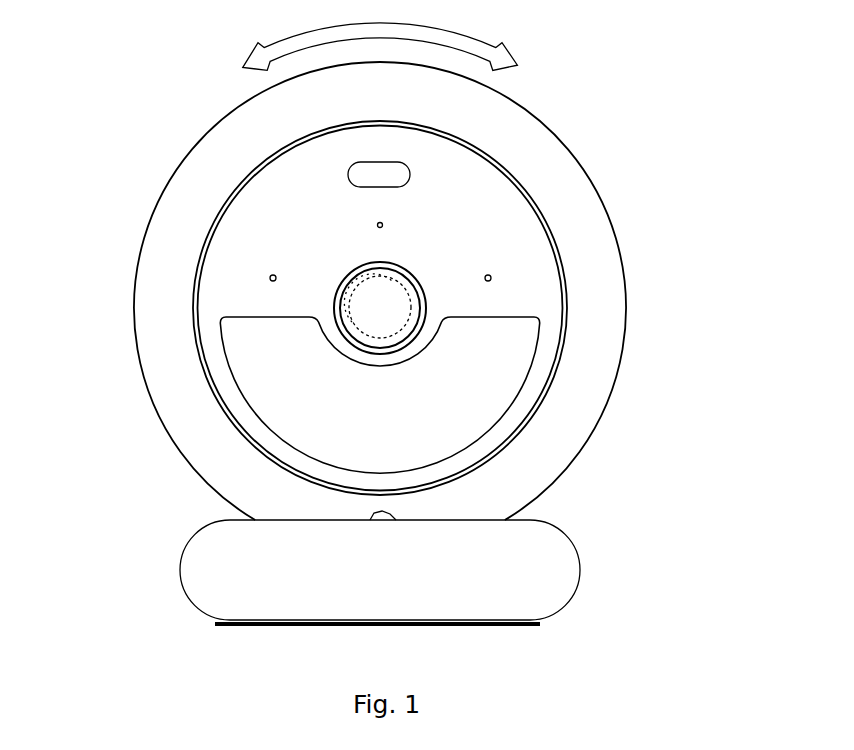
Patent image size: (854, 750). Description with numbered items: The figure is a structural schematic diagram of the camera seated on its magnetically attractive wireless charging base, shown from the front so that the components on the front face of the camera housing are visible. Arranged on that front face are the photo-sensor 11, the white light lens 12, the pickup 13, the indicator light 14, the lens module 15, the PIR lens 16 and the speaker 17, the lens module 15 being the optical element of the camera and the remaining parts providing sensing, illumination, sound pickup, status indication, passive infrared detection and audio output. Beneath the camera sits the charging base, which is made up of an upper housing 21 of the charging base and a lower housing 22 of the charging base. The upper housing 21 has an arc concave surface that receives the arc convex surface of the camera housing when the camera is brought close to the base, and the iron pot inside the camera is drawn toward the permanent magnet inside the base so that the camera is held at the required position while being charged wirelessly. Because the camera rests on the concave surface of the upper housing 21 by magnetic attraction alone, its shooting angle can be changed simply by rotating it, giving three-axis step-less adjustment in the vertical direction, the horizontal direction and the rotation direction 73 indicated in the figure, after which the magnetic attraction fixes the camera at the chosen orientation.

The photo-sensor 11 is at (270, 278).
The white light lens 12 is at (378, 172).
The pickup 13 is at (382, 225).
The indicator light 14 is at (491, 278).
The lens module 15 is at (380, 308).
The PIR lens 16 is at (465, 375).
The speaker 17 is at (384, 512).
The upper housing of the charging base 21 is at (508, 570).
The lower housing of the charging base 22 is at (545, 623).
The rotation direction 73 is at (519, 62).